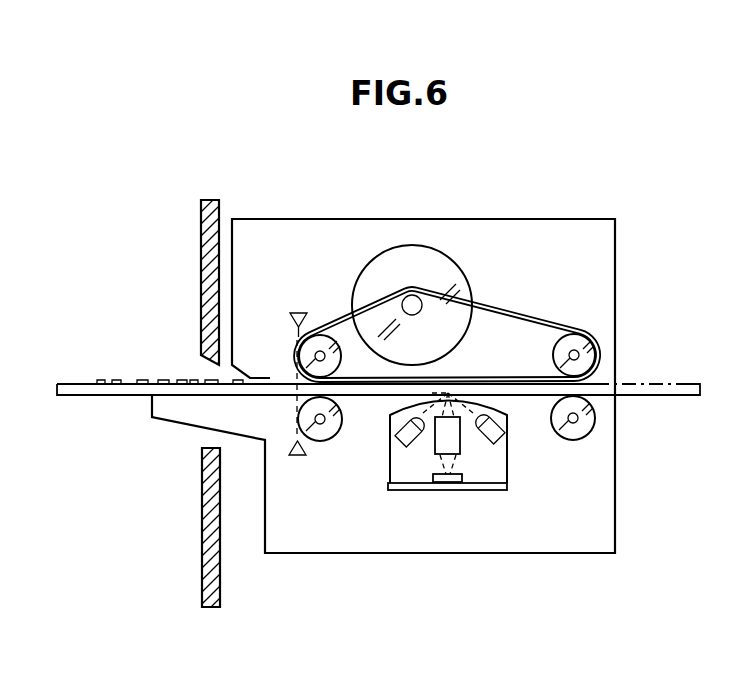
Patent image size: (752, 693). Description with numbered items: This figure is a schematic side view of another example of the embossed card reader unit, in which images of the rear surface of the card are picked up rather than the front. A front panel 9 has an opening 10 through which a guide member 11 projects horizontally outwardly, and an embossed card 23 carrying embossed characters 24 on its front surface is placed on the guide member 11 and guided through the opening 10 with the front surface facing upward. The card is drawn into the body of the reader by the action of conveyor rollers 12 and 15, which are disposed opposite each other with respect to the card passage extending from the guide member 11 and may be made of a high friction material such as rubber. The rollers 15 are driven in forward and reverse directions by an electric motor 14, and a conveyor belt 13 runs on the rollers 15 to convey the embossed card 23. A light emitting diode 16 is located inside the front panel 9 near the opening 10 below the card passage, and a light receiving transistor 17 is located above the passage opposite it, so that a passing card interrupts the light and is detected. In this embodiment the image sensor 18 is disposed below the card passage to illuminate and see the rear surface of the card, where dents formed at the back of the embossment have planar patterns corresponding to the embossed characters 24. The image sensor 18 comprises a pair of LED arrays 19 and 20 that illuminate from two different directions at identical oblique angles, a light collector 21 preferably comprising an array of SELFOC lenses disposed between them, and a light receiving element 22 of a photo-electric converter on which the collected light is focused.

The front panel 9 is at (202, 250).
The opening 10 is at (204, 372).
The guide member 11 is at (165, 424).
The conveyor rollers 12 is at (588, 420).
The conveyor belt 13 is at (349, 330).
The electric motor 14 is at (410, 253).
The conveyor rollers 15 is at (304, 354).
The light emitting diode 16 is at (290, 455).
The light receiving transistor 17 is at (297, 312).
The image sensor 18 is at (427, 493).
The light emitting diode array 19 is at (497, 440).
The light emitting diode array 20 is at (401, 440).
The light collector 21 is at (453, 443).
The light receiving element 22 is at (455, 484).
The embossed card 23 is at (98, 382).
The embossed characters 24 is at (118, 382).